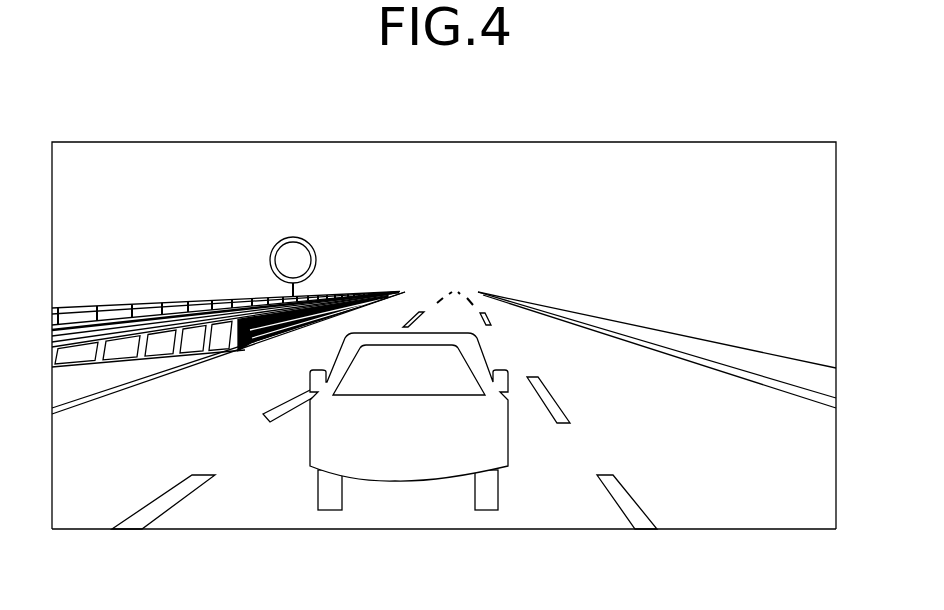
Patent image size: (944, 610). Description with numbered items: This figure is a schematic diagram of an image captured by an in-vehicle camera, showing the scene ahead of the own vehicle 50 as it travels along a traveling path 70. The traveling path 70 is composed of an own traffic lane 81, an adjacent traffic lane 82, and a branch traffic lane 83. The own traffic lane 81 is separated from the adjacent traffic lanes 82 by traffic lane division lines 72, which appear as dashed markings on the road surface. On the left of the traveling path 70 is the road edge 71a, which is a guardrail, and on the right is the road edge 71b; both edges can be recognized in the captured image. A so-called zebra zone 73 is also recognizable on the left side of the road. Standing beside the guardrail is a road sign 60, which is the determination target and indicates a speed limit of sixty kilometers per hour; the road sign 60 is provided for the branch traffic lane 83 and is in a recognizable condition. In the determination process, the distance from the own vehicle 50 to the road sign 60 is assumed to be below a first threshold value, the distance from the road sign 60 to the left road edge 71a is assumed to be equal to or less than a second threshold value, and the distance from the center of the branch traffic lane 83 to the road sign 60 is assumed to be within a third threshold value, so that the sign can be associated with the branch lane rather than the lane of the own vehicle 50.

The own vehicle 50 is at (380, 482).
The road sign 60 is at (311, 241).
The traveling path 70 is at (57, 440).
The road edge 71a is at (73, 311).
The road edge 71b is at (818, 393).
The traffic lane division lines 72 is at (163, 506).
The zebra zone 73 is at (82, 368).
The own traffic lane 81 is at (592, 522).
The adjacent traffic lane 82 is at (87, 522).
The branch traffic lane 83 is at (62, 343).